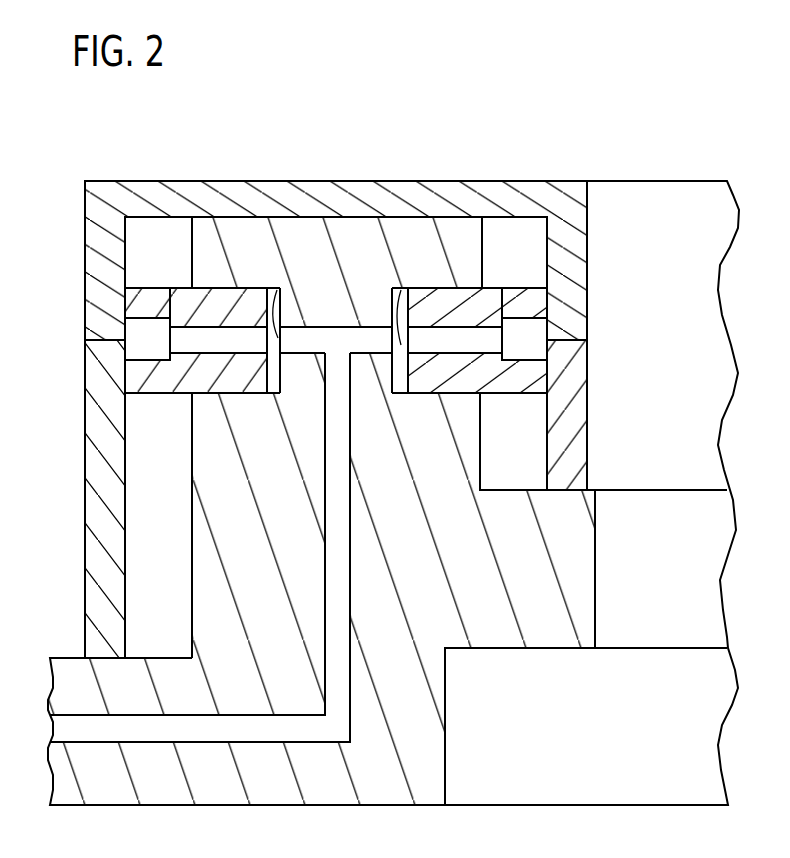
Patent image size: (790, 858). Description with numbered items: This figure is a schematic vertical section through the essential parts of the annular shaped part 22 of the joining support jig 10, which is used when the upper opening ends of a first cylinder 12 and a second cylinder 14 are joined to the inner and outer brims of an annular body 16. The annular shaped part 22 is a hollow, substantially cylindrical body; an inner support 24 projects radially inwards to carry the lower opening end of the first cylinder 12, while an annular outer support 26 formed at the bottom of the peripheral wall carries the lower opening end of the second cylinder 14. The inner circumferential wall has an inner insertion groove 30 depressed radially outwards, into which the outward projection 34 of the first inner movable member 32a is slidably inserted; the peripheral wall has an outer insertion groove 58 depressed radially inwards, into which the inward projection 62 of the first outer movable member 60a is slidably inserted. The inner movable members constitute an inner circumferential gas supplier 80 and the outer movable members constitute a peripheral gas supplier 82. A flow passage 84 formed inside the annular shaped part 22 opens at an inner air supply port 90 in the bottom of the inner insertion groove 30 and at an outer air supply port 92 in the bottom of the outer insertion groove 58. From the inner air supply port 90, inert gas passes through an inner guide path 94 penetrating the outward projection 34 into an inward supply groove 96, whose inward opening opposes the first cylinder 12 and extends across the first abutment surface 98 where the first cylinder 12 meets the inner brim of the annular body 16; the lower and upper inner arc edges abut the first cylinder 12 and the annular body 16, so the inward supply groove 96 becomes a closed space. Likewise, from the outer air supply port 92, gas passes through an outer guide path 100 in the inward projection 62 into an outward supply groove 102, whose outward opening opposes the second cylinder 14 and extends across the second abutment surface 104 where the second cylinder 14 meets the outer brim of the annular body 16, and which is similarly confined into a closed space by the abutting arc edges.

The joining support jig 10 is at (192, 468).
The first cylinder 12 is at (577, 412).
The second cylinder 14 is at (98, 482).
The annular body 16 is at (361, 188).
The annular shaped part 22 is at (192, 545).
The inner support 24 is at (585, 570).
The outer support 26 is at (67, 663).
The inner insertion groove 30 is at (448, 392).
The first inner movable member 32a is at (497, 297).
The outward projection 34 is at (452, 300).
The outer insertion groove 58 is at (223, 392).
The first outer movable member 60a is at (173, 297).
The inward projection 62 is at (235, 298).
The inner circumferential gas supplier 80 is at (530, 330).
The peripheral gas supplier 82 is at (142, 332).
The flow passage 84 is at (338, 690).
The inner air supply port 90 is at (399, 340).
The outer air supply port 92 is at (274, 340).
The inner guide path 94 is at (468, 337).
The inward supply groove 96 is at (519, 332).
The first abutment surface 98 is at (583, 340).
The outer guide path 100 is at (213, 340).
The outward supply groove 102 is at (155, 328).
The second abutment surface 104 is at (86, 341).